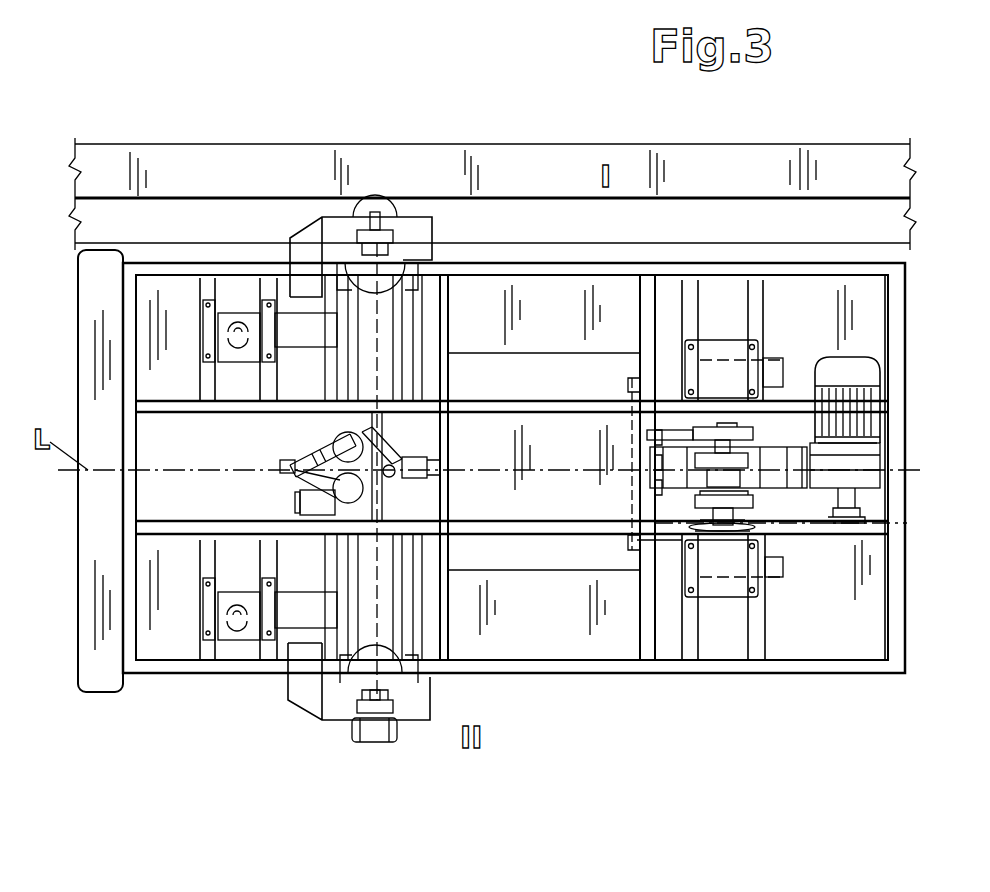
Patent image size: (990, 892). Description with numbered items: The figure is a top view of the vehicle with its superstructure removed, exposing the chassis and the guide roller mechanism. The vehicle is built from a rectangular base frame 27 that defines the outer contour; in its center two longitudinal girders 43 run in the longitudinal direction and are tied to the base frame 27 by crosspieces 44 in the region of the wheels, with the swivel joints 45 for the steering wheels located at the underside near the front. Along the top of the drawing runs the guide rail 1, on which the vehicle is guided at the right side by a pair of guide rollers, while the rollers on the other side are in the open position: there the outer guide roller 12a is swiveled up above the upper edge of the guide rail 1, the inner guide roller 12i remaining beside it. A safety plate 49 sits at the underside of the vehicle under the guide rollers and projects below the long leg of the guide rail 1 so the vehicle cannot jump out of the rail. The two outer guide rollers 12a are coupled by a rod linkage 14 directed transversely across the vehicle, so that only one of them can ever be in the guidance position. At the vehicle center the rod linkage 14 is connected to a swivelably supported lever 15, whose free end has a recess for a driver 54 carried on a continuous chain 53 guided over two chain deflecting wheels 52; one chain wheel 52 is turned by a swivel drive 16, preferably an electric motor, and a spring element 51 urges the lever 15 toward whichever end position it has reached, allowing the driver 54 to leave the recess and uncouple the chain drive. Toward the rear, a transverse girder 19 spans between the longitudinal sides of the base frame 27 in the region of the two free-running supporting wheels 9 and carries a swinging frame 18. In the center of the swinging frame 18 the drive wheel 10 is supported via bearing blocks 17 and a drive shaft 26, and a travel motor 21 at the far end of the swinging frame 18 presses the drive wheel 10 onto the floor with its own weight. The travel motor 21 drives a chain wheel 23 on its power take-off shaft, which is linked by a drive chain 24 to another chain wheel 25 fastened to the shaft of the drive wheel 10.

The guide rail 1 is at (895, 232).
The supporting wheels 9 is at (768, 369).
The drive wheel 10 is at (823, 444).
The outer guide roller 12a is at (372, 203).
The inner guide roller 12i is at (381, 258).
The rod linkage 14 is at (376, 386).
The lever 15 is at (386, 458).
The swivel drive 16 is at (320, 508).
The bearing blocks 17 is at (703, 455).
The swinging frame 18 is at (775, 503).
The transverse girder 19 is at (633, 380).
The travel motor 21 is at (877, 404).
The chain wheel 23 is at (850, 523).
The drive chain 24 is at (805, 528).
The chain wheel 25 is at (730, 540).
The drive shaft 26 is at (790, 481).
The base frame 27 is at (893, 621).
The longitudinal girders 43 is at (145, 405).
The crosspieces 44 is at (208, 290).
The swivel joints 45 is at (237, 627).
The safety plate 49 is at (308, 690).
The spring element 51 is at (293, 463).
The chain deflecting wheels 52 is at (300, 486).
The continuous chain 53 is at (405, 491).
The driver 54 is at (335, 441).